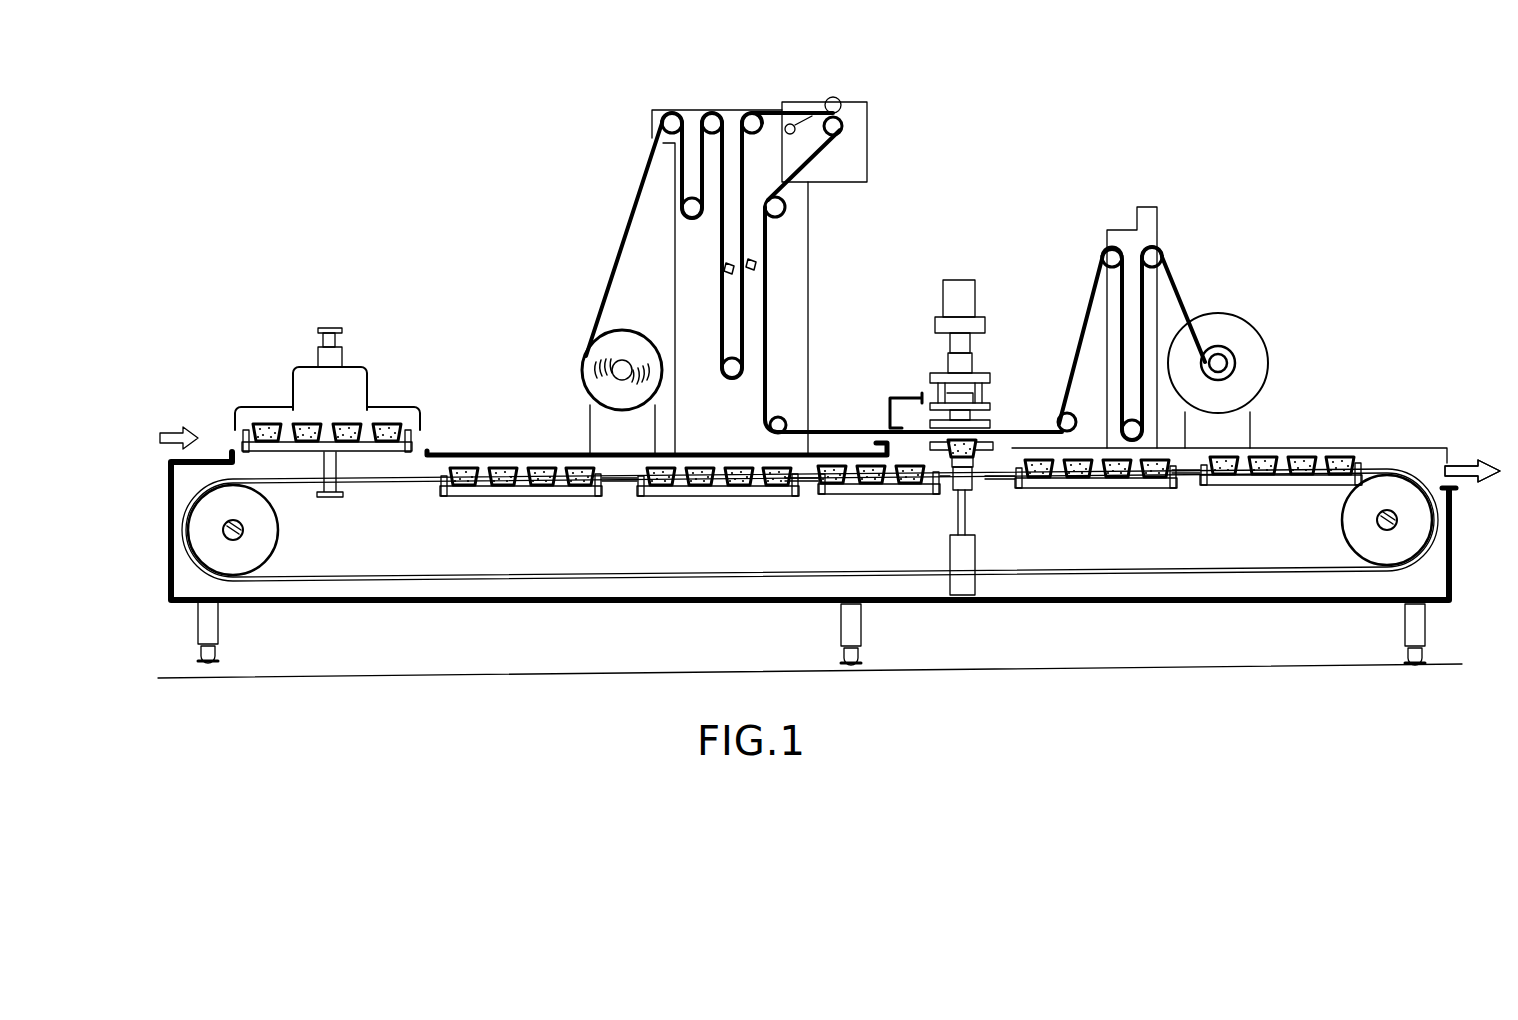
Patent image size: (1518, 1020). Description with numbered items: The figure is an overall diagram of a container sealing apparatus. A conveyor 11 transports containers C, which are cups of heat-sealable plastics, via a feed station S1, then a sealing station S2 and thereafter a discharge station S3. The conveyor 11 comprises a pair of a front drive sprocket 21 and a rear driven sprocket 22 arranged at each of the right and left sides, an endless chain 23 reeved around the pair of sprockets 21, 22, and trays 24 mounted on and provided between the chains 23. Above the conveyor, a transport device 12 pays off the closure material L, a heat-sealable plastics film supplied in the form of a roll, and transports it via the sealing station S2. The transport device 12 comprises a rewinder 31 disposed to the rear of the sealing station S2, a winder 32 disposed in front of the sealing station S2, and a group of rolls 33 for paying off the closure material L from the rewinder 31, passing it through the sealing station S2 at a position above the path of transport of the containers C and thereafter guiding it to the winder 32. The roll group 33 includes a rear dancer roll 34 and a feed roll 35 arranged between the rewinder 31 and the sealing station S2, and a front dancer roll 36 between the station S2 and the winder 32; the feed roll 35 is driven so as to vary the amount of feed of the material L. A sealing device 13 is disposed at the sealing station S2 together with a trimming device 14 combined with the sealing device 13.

The conveyor 11 is at (628, 580).
The transport device 12 is at (873, 92).
The sealing device 13 is at (984, 394).
The trimming device 14 is at (1004, 413).
The front drive sprocket 21 is at (1349, 532).
The rear driven sprocket 22 is at (267, 542).
The endless chain 23 is at (1065, 573).
The trays 24 is at (411, 446).
The rewinder 31 is at (580, 376).
The winder 32 is at (1266, 349).
The group of rolls 33 is at (821, 248).
The rear dancer roll 34 is at (730, 378).
The feed roll 35 is at (842, 126).
The front dancer roll 36 is at (1130, 423).
The containers C is at (766, 494).
The closure material L is at (625, 236).
The feed station S1 is at (324, 305).
The sealing station S2 is at (960, 264).
The discharge station S3 is at (1444, 422).